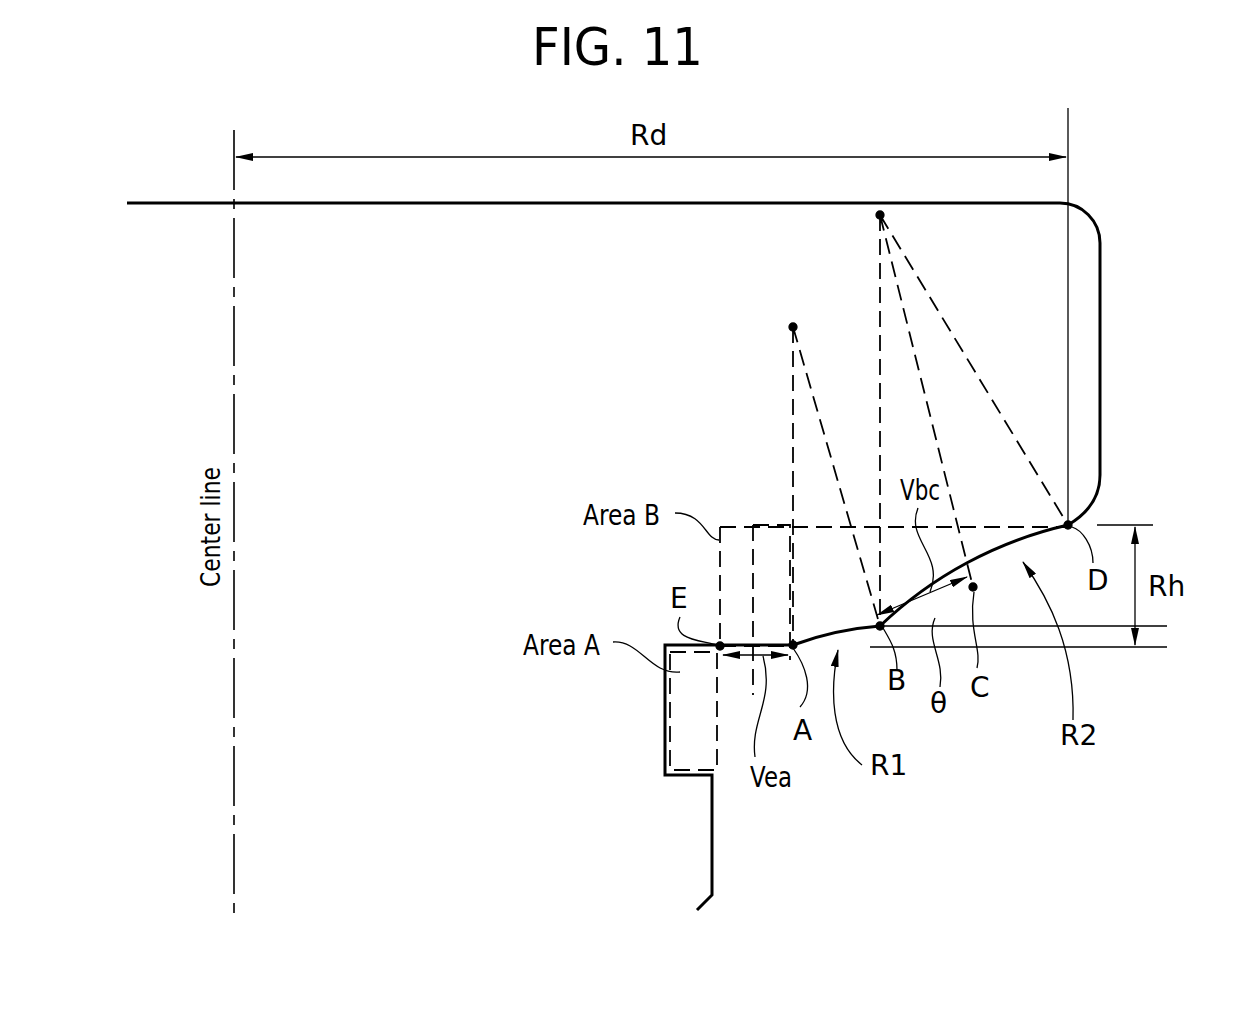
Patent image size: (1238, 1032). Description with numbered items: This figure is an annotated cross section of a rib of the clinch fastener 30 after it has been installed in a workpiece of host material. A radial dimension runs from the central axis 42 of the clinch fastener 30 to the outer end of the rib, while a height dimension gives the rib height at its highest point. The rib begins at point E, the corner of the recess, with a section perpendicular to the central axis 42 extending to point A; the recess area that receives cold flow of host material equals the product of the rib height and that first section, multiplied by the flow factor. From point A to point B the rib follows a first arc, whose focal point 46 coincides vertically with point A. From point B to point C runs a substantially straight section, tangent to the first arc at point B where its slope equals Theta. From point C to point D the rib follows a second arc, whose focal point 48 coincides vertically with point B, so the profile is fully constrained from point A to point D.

The central axis 42 is at (237, 387).
The clinch fastener 30 is at (1077, 288).
The focal point 46 is at (790, 328).
The focal point 48 is at (881, 213).